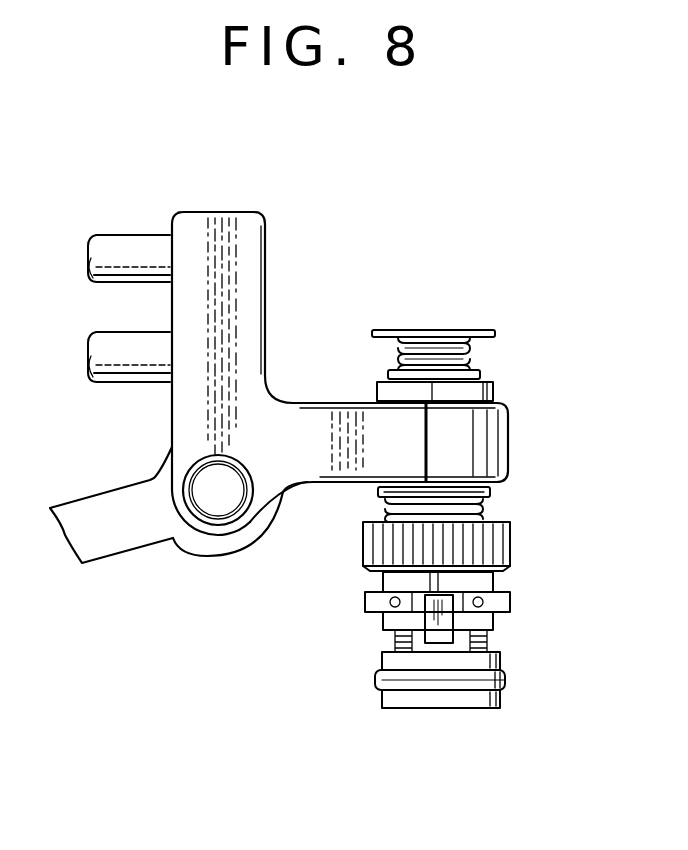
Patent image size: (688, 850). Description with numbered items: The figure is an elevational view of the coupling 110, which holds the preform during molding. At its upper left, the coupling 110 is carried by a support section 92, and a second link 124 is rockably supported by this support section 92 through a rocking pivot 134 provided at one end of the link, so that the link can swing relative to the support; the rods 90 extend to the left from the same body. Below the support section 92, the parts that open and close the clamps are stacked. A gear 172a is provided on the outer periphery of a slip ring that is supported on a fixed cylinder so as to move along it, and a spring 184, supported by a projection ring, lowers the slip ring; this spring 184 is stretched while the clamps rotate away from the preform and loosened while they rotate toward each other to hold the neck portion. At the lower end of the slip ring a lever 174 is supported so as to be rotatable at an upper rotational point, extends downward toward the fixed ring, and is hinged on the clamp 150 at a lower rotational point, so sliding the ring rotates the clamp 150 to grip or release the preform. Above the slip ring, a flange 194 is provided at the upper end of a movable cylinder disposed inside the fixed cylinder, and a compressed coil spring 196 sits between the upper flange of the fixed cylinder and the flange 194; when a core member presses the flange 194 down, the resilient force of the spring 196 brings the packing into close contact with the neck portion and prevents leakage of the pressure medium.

The rods 90 is at (108, 337).
The support section 92 is at (490, 425).
The coupling 110 is at (530, 480).
The second link 124 is at (111, 537).
The rocking pivot 134 is at (218, 508).
The clamp 150 is at (507, 678).
The gear 172a is at (507, 545).
The lever 174 is at (453, 631).
The spring 184 is at (387, 505).
The flange 194 is at (487, 327).
The compressed coil spring 196 is at (480, 358).